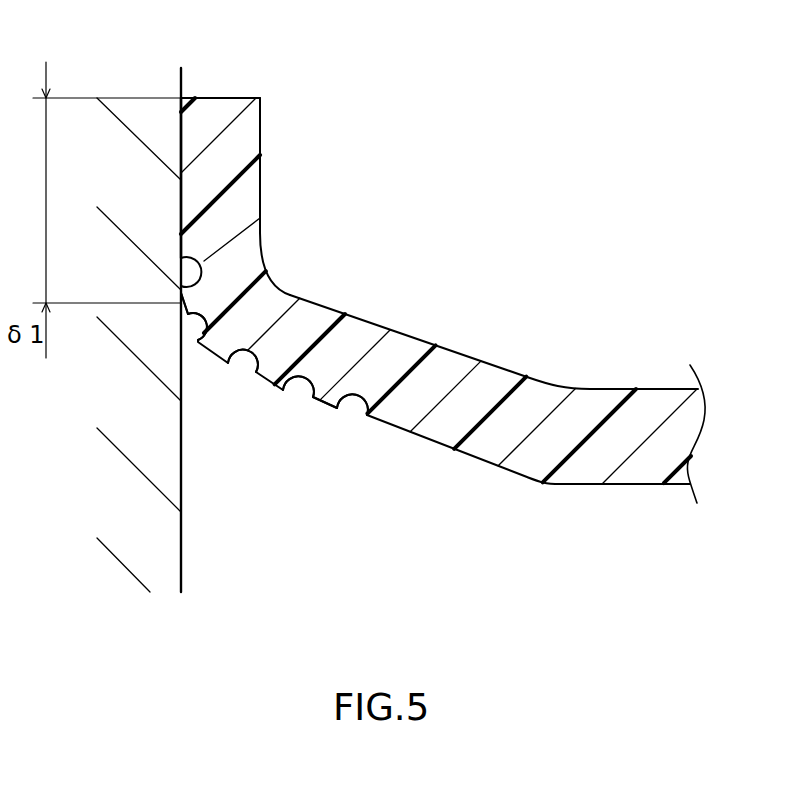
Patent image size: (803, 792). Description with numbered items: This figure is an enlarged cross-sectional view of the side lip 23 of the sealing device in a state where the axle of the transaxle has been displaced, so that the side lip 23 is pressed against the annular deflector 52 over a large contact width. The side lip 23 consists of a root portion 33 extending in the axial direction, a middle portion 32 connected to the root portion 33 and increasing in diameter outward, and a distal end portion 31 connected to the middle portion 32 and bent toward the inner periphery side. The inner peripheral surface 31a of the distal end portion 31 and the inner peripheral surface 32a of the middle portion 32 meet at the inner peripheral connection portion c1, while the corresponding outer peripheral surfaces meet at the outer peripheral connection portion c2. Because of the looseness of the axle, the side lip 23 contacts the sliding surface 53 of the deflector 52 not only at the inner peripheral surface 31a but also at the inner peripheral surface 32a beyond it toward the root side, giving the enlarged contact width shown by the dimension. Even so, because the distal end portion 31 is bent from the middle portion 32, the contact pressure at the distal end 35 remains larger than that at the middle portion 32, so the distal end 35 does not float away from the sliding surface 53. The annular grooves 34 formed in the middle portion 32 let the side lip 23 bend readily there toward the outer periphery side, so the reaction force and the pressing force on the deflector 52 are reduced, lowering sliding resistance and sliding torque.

The side lip 23 is at (652, 290).
The distal end portion 31 is at (267, 149).
The inner peripheral surface 31a is at (181, 133).
The middle portion 32 is at (488, 380).
The inner peripheral surface 32a is at (333, 410).
The root portion 33 is at (627, 465).
The groove 34 is at (188, 259).
The distal end 35 is at (184, 98).
The deflector 52 is at (129, 548).
The sliding surface 53 is at (183, 542).
The inner peripheral connection portion c1 is at (181, 240).
The outer peripheral connection portion c2 is at (260, 192).